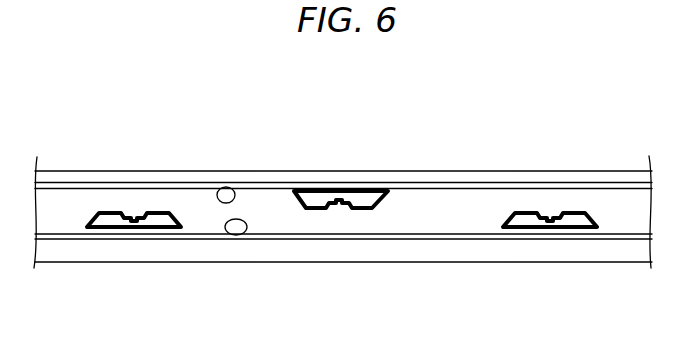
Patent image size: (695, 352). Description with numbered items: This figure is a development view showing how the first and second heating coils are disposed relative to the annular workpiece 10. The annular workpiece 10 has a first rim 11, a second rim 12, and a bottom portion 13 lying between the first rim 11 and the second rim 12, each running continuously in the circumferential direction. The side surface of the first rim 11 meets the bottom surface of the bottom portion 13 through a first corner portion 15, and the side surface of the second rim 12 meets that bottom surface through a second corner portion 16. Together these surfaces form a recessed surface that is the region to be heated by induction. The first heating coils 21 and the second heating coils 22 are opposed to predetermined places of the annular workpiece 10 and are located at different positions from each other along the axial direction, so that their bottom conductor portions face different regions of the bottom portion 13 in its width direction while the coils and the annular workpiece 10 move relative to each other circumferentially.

The annular workpiece 10 is at (623, 171).
The first rim 11 is at (447, 239).
The second rim 12 is at (442, 183).
The bottom portion 13 is at (476, 203).
The first corner portion 15 is at (232, 226).
The second corner portion 16 is at (218, 188).
The first heating coil 21 is at (107, 230).
The second heating coil 22 is at (318, 189).